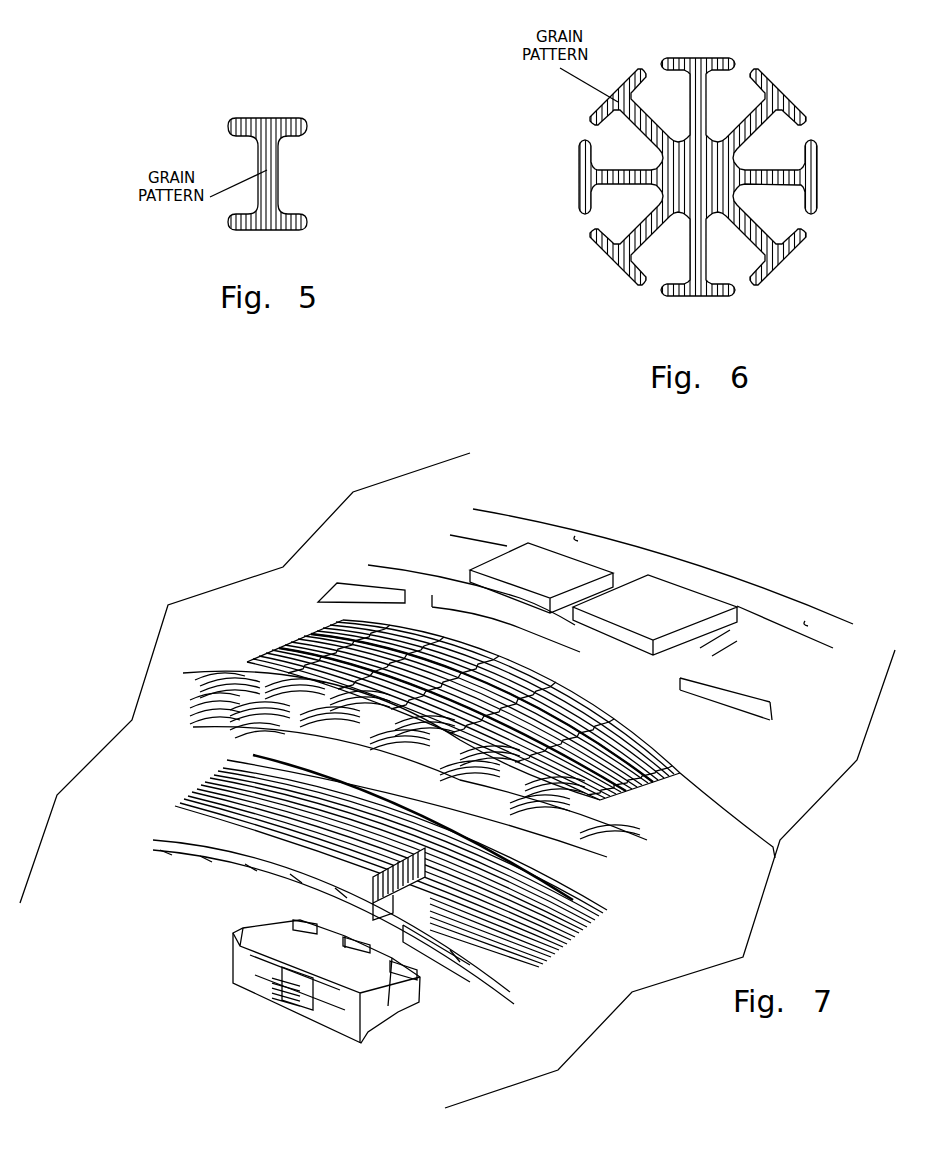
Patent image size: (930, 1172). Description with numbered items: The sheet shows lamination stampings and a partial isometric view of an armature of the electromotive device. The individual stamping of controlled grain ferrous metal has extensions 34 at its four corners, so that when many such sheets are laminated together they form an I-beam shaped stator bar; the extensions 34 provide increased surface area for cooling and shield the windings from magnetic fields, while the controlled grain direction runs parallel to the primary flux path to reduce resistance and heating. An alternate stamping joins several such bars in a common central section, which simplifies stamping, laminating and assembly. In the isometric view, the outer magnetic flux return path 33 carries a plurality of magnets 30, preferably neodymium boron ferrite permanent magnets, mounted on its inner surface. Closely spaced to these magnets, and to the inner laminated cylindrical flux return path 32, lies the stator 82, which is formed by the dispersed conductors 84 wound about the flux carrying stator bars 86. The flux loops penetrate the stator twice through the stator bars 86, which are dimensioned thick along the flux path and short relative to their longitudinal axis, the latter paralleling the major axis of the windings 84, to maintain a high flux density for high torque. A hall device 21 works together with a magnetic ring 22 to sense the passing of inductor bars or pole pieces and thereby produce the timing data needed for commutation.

In FIG. 5, the extensions 34 is at (230, 123).
In FIG. 6, the extensions 34 is at (738, 60).
In FIG. 7, the magnetic flux return path 33 is at (722, 572).
In FIG. 7, the magnets 30 is at (720, 707).
In FIG. 7, the stator 82 is at (638, 845).
In FIG. 7, the stator bars 86 is at (290, 643).
In FIG. 7, the dispersed conductors 84 is at (273, 713).
In FIG. 7, the magnetic ring 22 is at (513, 998).
In FIG. 7, the laminated cylindrical flux return path 32 is at (240, 842).
In FIG. 7, the hall device 21 is at (233, 985).